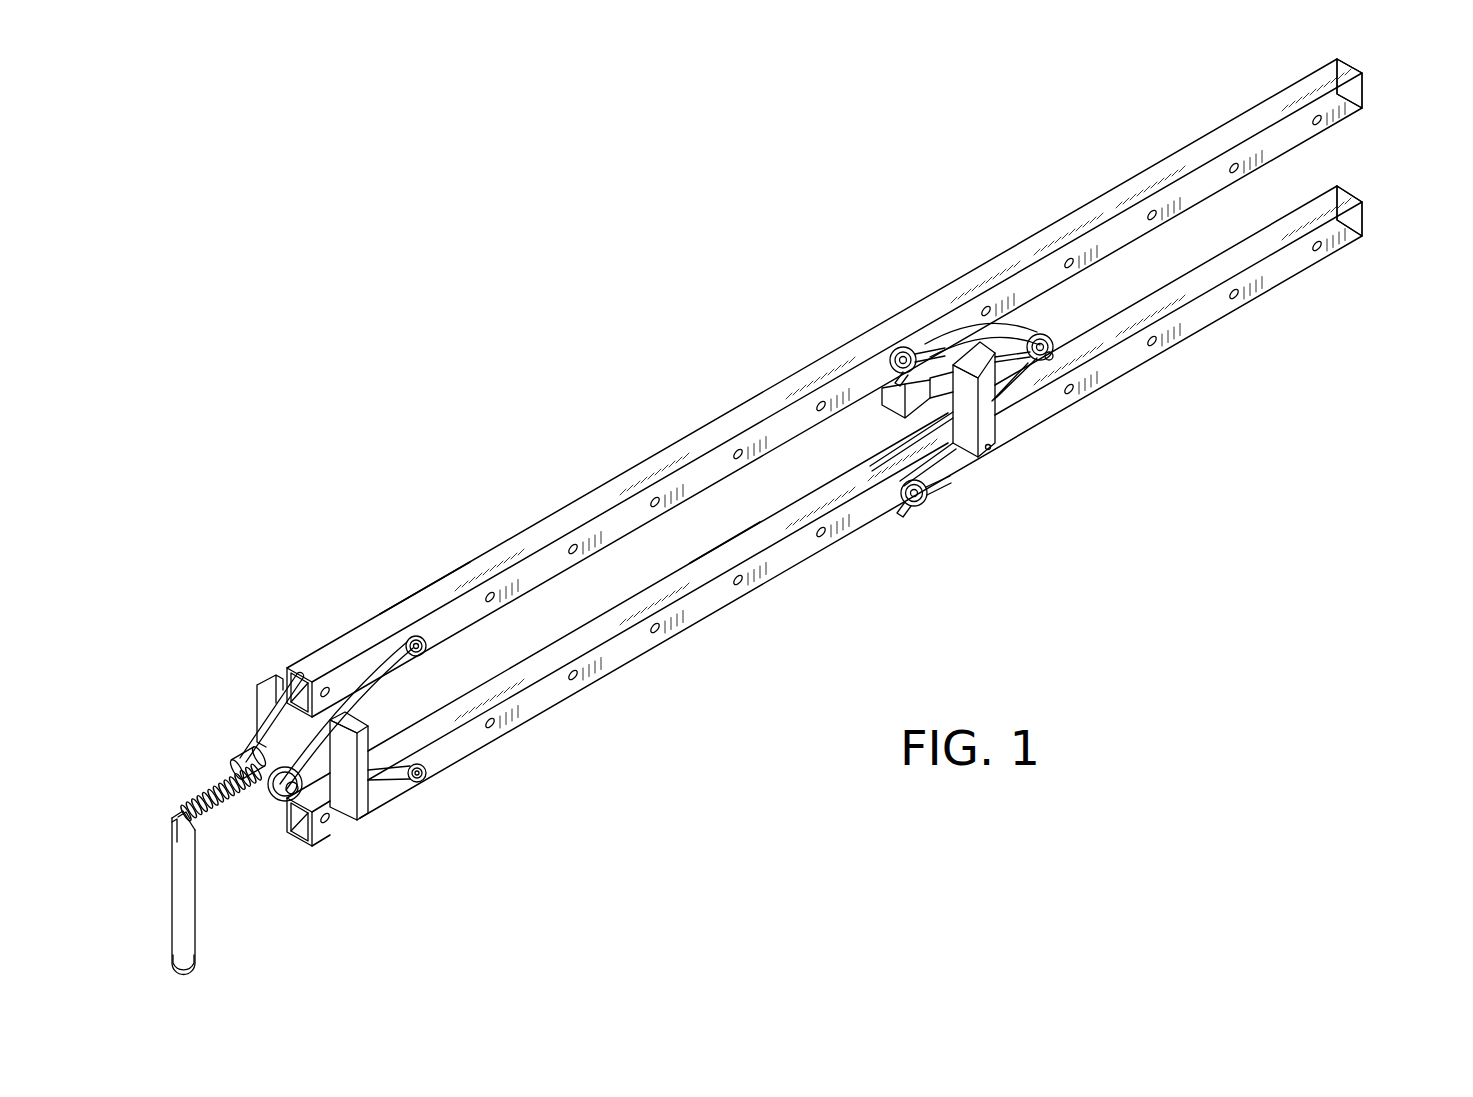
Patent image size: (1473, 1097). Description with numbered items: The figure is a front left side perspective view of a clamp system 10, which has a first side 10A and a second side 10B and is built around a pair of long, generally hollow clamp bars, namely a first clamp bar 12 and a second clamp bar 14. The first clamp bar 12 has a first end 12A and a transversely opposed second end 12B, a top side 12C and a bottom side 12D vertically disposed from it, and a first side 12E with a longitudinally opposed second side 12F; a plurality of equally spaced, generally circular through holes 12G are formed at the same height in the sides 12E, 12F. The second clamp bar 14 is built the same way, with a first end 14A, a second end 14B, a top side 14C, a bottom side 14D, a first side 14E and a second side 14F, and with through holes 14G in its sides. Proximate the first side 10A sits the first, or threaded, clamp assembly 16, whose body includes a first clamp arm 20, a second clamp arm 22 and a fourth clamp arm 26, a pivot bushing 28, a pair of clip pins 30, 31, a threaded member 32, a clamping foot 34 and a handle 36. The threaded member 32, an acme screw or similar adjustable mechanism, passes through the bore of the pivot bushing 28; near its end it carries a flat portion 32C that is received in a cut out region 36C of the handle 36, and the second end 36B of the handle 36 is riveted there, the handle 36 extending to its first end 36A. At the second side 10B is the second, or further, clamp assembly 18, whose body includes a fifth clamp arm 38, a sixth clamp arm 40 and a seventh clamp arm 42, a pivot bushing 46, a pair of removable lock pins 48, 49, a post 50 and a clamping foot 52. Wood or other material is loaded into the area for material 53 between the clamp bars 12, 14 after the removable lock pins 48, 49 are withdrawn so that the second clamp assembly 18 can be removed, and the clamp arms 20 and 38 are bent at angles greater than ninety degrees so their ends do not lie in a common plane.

The clamp system 10 is at (693, 274).
The first side 10A is at (207, 588).
The second side 10B is at (1327, 303).
The first clamp bar 12 is at (562, 488).
The first end 12A is at (297, 664).
The second end 12B is at (1365, 76).
The top side 12C is at (627, 480).
The bottom side 12D is at (697, 508).
The first side 12E is at (617, 524).
The second side 12F is at (432, 585).
The through holes 12G is at (571, 542).
The second clamp bar 14 is at (605, 694).
The first end 14A is at (300, 836).
The second end 14B is at (1365, 204).
The top side 14C is at (583, 637).
The bottom side 14D is at (490, 756).
The first side 14E is at (617, 655).
The second side 14F is at (717, 521).
The through holes 14G is at (660, 636).
The first clamp assembly 16 is at (267, 824).
The second clamp assembly 18 is at (962, 298).
The first clamp arm 20 is at (366, 649).
The second clamp arm 22 is at (391, 800).
The fourth clamp arm 26 is at (249, 698).
The pivot bushing 28 is at (234, 748).
The clip pin 30 is at (422, 652).
The clip pin 31 is at (425, 785).
The threaded member 32 is at (200, 777).
The flat portion 32C is at (183, 812).
The clamping foot 34 is at (249, 669).
The handle 36 is at (160, 909).
The first end 36A is at (200, 968).
The second end 36B is at (172, 815).
The cut out region 36C is at (175, 838).
The fifth clamp arm 38 is at (940, 312).
The sixth clamp arm 40 is at (959, 469).
The seventh clamp arm 42 is at (891, 423).
The pivot bushing 46 is at (1050, 355).
The removable lock pin 48 is at (926, 342).
The removable lock pin 49 is at (926, 500).
The post 50 is at (1003, 368).
The clamping foot 52 is at (998, 458).
The area for material 53 is at (787, 465).